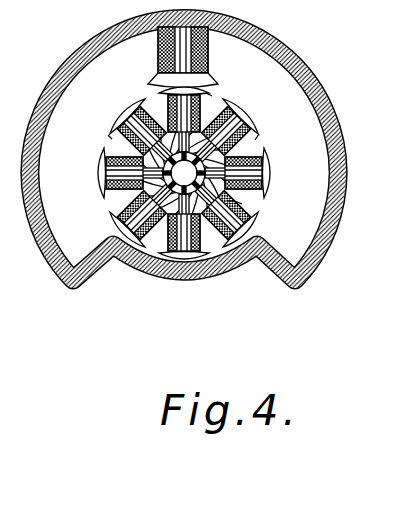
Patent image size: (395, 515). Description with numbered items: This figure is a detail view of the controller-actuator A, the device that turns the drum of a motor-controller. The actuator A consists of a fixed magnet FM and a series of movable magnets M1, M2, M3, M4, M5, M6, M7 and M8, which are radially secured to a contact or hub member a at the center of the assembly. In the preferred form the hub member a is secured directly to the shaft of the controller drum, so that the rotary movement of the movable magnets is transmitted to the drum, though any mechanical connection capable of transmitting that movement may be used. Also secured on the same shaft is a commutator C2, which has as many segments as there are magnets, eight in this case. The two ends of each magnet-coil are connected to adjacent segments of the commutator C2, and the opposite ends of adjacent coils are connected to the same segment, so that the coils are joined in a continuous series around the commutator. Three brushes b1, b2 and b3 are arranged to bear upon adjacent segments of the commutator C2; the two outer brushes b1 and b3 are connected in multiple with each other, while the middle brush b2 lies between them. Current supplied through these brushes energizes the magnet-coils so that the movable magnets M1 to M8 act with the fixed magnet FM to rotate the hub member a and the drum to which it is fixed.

The controller-actuator A is at (268, 40).
The fixed magnet FM is at (206, 50).
The movable magnet M1 is at (209, 90).
The movable magnet M2 is at (259, 126).
The movable magnet M3 is at (269, 176).
The movable magnet M4 is at (238, 213).
The movable magnet M5 is at (189, 257).
The movable magnet M6 is at (113, 232).
The movable magnet M7 is at (98, 178).
The movable magnet M8 is at (118, 127).
The commutator C2 is at (184, 173).
The hub member a is at (241, 203).
The brush b1 is at (254, 148).
The brush b2 is at (216, 104).
The brush b3 is at (117, 148).